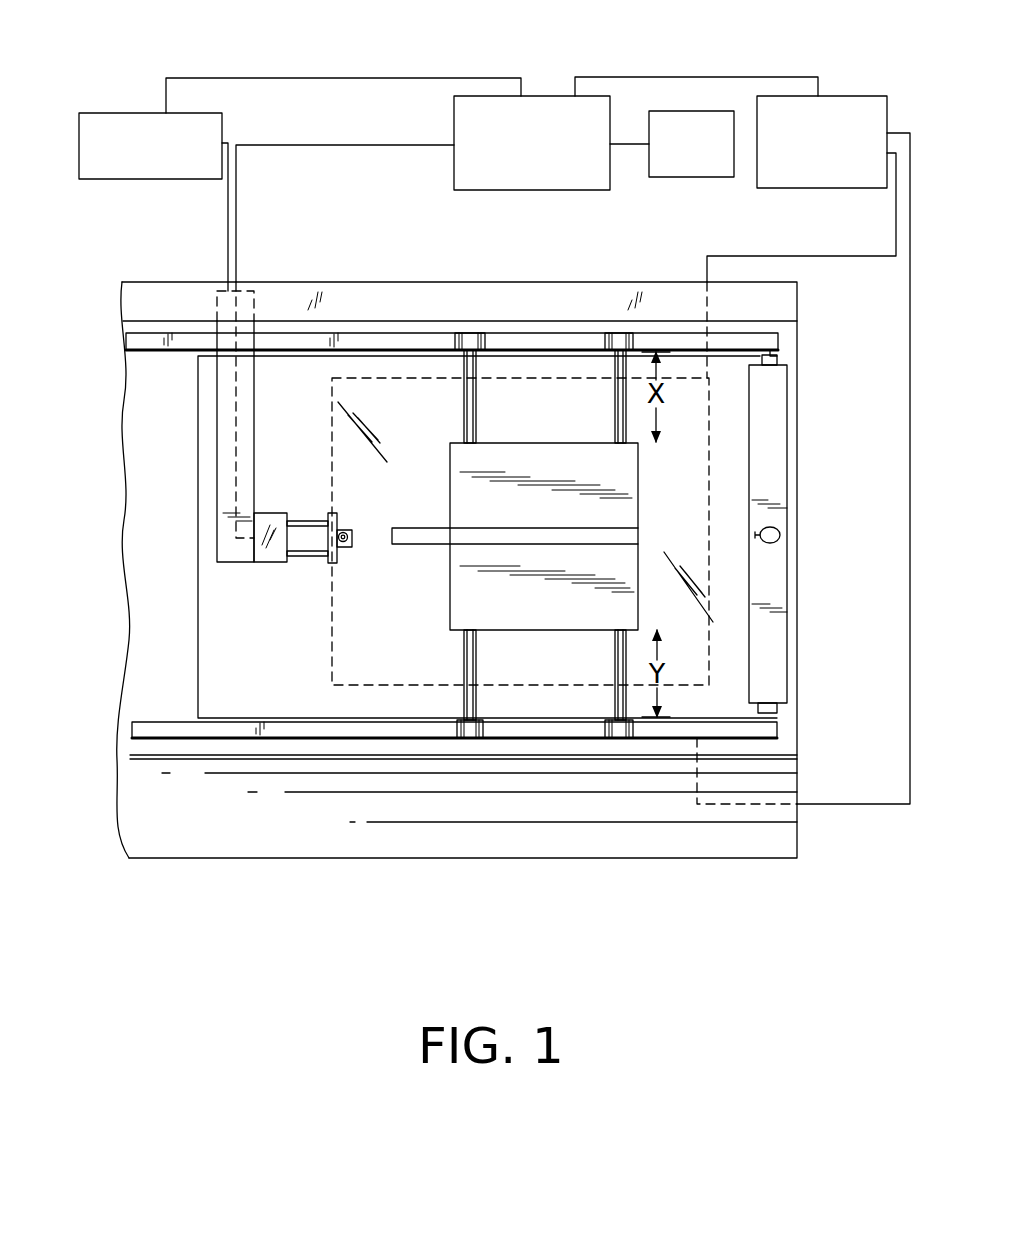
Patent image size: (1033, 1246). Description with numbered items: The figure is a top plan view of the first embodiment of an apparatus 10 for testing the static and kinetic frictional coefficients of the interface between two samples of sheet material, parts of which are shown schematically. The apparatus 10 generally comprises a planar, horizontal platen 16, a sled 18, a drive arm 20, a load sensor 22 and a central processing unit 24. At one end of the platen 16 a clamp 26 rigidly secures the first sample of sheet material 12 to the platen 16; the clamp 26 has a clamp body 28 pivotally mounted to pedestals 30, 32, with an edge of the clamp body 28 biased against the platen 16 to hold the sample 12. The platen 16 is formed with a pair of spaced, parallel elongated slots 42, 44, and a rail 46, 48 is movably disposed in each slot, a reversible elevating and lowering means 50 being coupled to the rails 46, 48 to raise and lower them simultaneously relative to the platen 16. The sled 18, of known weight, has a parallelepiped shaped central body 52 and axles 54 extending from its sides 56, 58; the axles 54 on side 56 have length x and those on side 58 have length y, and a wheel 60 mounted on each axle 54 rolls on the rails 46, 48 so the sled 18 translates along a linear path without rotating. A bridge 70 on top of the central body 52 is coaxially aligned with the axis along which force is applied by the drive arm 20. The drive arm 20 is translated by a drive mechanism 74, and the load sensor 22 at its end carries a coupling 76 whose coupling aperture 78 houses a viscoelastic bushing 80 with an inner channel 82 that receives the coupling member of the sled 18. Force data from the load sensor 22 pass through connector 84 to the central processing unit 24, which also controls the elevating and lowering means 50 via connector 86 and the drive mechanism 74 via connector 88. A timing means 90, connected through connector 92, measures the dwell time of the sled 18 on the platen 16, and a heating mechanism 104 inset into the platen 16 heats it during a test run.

The apparatus 10 is at (66, 883).
The first sample of sheet material 12 is at (263, 663).
The platen 16 is at (151, 673).
The sled 18 is at (446, 456).
The drive arm 20 is at (259, 421).
The load sensor 22 is at (272, 566).
The central processing unit 24 is at (545, 96).
The clamp 26 is at (784, 357).
The clamp body 28 is at (787, 387).
The pedestal 30 is at (770, 348).
The pedestal 32 is at (774, 717).
The elongated slot 42 is at (160, 335).
The elongated slot 44 is at (147, 717).
The rail 46 is at (380, 345).
The rail 48 is at (340, 728).
The reversible elevating and lowering means 50 is at (850, 96).
The central body 52 is at (638, 473).
The axles 54 is at (477, 398).
The side 56 is at (452, 453).
The side 58 is at (450, 633).
The wheel 60 is at (488, 333).
The bridge 70 is at (420, 547).
The drive mechanism 74 is at (148, 113).
The coupling 76 is at (334, 506).
The coupling aperture 78 is at (339, 560).
The viscoelastic bushing 80 is at (338, 528).
The inner channel 82 is at (352, 537).
The connector 84 is at (310, 145).
The connector 86 is at (715, 77).
The connector 88 is at (291, 78).
The timing means 90 is at (685, 111).
The connector 92 is at (628, 144).
The heating mechanism 104 is at (708, 458).